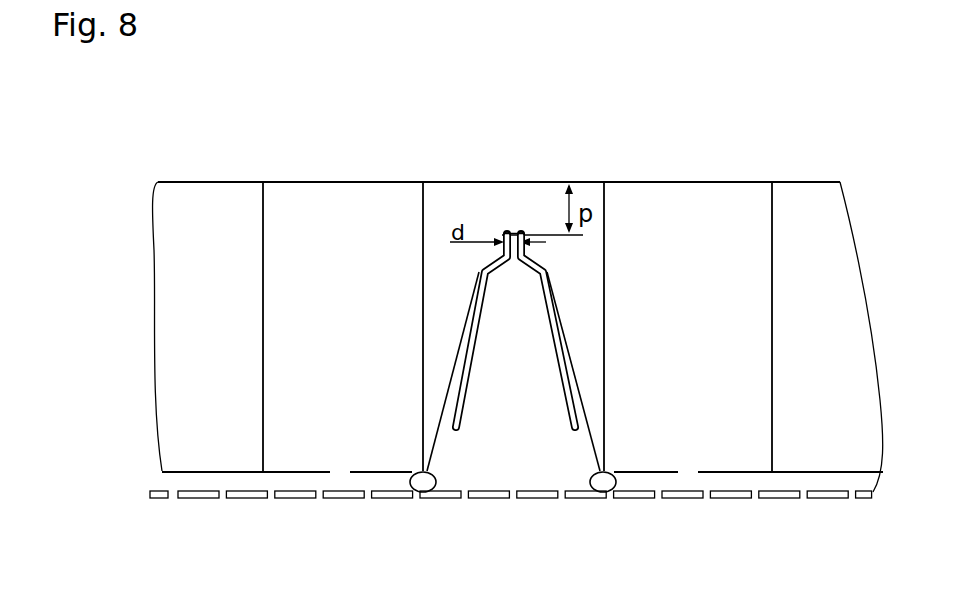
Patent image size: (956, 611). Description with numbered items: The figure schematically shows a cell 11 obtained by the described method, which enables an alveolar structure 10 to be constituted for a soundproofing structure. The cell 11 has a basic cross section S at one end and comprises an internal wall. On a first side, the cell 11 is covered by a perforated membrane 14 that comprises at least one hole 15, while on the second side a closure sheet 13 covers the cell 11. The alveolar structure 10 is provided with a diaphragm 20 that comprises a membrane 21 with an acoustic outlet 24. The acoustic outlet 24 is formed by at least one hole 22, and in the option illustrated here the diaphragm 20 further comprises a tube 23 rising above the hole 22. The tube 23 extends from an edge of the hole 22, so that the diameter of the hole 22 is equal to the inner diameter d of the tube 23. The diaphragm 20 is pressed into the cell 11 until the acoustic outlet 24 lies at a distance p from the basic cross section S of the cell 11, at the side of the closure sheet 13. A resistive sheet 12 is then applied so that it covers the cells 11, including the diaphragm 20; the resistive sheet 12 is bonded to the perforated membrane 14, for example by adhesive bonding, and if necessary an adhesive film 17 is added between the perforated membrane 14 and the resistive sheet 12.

The alveolar structure 10 is at (106, 200).
The cell 11 is at (463, 214).
The resistive sheet 12 is at (544, 516).
The closure sheet 13 is at (495, 173).
The perforated membrane 14 is at (457, 463).
The hole 15 is at (577, 298).
The adhesive film 17 is at (416, 507).
The diaphragm 20 is at (355, 291).
The membrane 21 is at (464, 296).
The hole 22 is at (513, 286).
The tube 23 is at (541, 253).
The acoustic outlet 24 is at (516, 224).